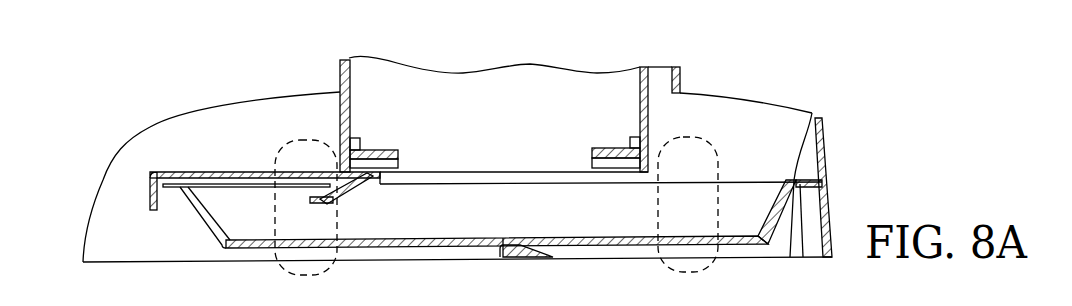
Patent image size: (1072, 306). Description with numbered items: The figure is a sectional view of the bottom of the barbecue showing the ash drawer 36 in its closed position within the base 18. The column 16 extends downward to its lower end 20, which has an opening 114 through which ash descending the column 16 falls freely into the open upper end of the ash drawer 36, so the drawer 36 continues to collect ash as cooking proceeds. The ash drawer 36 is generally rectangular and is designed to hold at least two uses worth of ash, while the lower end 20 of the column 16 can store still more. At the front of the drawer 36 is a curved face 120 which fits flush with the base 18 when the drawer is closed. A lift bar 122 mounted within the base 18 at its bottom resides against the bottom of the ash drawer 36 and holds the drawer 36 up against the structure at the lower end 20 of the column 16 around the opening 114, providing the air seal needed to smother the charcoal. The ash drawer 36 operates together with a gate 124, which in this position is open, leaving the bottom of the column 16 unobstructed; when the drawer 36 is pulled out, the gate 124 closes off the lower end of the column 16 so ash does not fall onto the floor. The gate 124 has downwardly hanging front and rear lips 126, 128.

The column 16 is at (340, 73).
The base 18 is at (133, 142).
The lower end of the column 20 is at (338, 140).
The ash drawer 36 is at (740, 188).
The opening 114 is at (460, 168).
The curved face 120 is at (830, 165).
The lift bar 122 is at (520, 258).
The gate 124 is at (252, 170).
The front lip 126 is at (350, 194).
The rear lip 128 is at (148, 202).